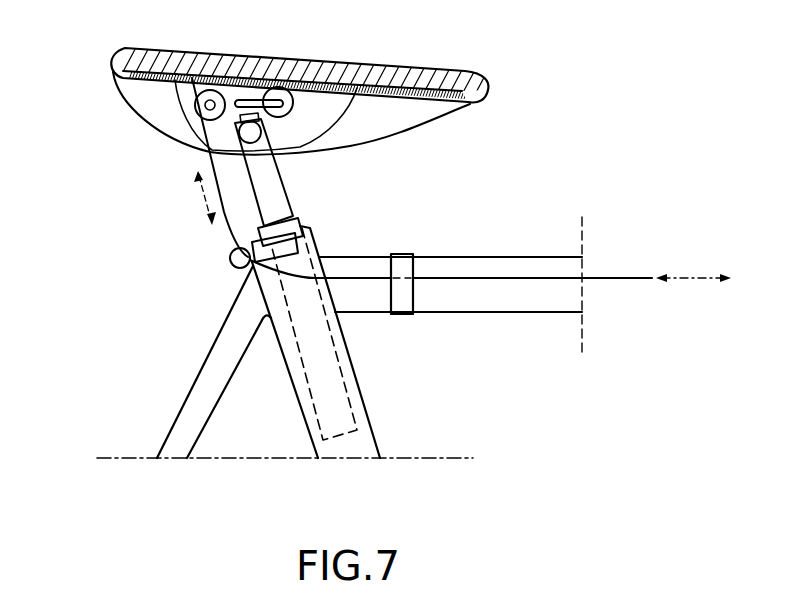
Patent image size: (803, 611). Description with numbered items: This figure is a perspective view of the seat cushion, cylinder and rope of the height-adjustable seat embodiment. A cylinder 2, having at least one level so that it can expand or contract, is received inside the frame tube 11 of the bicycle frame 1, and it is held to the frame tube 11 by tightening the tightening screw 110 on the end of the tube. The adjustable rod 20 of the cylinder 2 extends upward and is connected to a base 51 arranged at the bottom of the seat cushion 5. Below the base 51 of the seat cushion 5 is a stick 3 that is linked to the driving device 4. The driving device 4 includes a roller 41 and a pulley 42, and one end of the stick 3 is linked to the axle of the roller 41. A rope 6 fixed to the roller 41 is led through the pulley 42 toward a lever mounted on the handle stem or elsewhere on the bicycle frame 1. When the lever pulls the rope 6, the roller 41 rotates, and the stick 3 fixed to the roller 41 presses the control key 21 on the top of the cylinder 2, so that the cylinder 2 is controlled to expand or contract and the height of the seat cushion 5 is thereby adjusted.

The frame 1 is at (512, 258).
The cylinder 2 is at (302, 229).
The stick 3 is at (253, 110).
The driving device 4 is at (170, 114).
The seat cushion 5 is at (460, 70).
The rope 6 is at (605, 278).
The frame tube 11 is at (362, 397).
The adjustable rod 20 is at (278, 175).
The control key 21 is at (250, 117).
The roller 41 is at (332, 63).
The pulley 42 is at (200, 90).
The base 51 is at (442, 97).
The tightening screw 110 is at (236, 268).